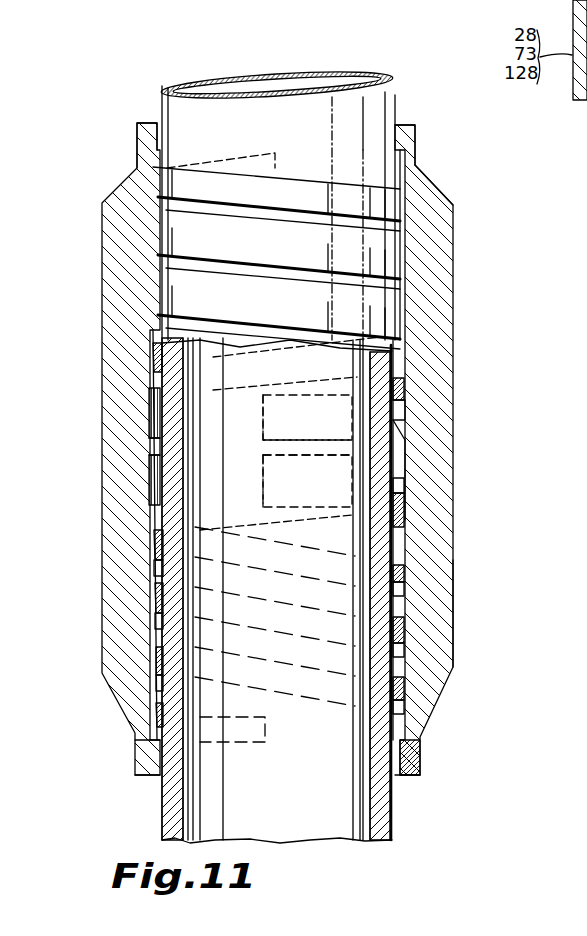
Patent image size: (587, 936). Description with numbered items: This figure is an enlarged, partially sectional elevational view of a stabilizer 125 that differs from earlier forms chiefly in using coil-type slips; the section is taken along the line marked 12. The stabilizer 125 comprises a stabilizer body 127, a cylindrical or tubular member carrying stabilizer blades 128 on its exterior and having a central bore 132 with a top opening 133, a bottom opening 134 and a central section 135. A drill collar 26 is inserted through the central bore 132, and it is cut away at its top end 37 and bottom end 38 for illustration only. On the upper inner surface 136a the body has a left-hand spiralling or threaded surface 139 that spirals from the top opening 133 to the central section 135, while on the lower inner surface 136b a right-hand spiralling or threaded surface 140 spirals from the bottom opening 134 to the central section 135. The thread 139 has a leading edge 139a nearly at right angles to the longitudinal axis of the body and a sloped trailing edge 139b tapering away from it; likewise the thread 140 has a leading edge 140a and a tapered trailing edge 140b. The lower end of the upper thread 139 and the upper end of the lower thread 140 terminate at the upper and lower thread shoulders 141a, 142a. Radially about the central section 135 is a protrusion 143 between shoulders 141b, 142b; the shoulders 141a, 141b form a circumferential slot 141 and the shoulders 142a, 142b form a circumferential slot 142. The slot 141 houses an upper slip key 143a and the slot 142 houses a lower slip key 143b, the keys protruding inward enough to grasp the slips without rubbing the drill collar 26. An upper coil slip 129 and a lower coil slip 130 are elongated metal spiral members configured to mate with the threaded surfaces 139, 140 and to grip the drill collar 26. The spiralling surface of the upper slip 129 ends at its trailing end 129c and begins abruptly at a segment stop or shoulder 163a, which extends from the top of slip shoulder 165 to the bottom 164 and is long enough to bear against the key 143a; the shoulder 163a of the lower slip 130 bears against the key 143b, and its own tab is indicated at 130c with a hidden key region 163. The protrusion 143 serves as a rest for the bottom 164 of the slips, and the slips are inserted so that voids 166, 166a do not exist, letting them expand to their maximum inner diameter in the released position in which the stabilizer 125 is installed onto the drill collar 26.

The section line 12- 12 is at (68, 148).
The drill collar 26 is at (389, 106).
The top end 37 is at (362, 78).
The bottom end 38 is at (372, 842).
The stabilizer 125 is at (472, 292).
The stabilizer body 127 is at (484, 613).
The stabilizer blades 128 is at (455, 237).
The upper coil slip 129 is at (403, 212).
The trailing end of slip 129c is at (264, 150).
The lower coil slip 130 is at (401, 642).
The lower ring tab 130c is at (266, 742).
The central bore 132 is at (152, 108).
The top opening 133 is at (399, 128).
The bottom opening 134 is at (398, 780).
The central section 135 is at (440, 476).
The upper inner surface 136a is at (403, 325).
The lower inner surface 136b is at (401, 665).
The left-hand spiralling or threaded surface 139 is at (402, 264).
The leading edge 139a is at (160, 328).
The tapered trailing edge 139b is at (160, 341).
The right-hand spiralling or threaded surface 140 is at (412, 706).
The leading edge 140a is at (156, 637).
The tapered trailing edge 140b is at (155, 606).
The circumferential slot 141 is at (405, 429).
The upper thread shoulder 141a is at (404, 391).
The shoulder 141b is at (404, 444).
The circumferential slot 142 is at (405, 522).
The lower thread shoulder 142a is at (405, 562).
The shoulder 142b is at (405, 498).
The protrusion 143 is at (149, 451).
The upper slip key 143a is at (149, 413).
The lower slip key 143b is at (149, 485).
The hidden key 163 is at (292, 428).
The segment stop or shoulder 163a is at (263, 400).
The bottom of slip 164 is at (265, 440).
The top of slip shoulder 165 is at (284, 396).
The void 166 is at (160, 282).
The void 166a is at (154, 561).